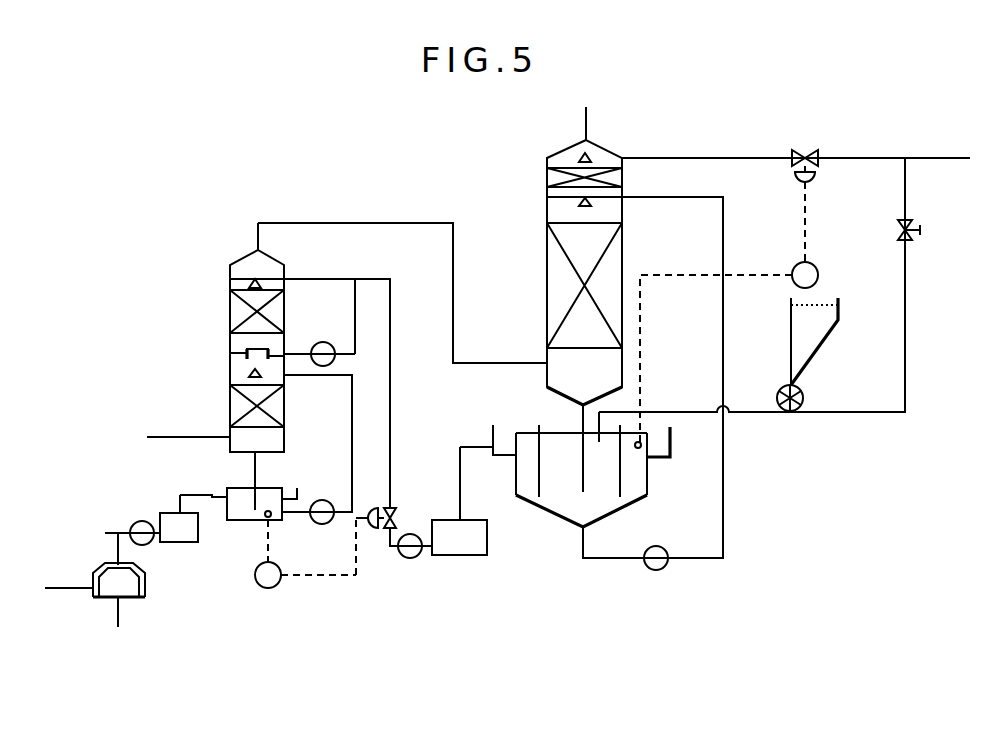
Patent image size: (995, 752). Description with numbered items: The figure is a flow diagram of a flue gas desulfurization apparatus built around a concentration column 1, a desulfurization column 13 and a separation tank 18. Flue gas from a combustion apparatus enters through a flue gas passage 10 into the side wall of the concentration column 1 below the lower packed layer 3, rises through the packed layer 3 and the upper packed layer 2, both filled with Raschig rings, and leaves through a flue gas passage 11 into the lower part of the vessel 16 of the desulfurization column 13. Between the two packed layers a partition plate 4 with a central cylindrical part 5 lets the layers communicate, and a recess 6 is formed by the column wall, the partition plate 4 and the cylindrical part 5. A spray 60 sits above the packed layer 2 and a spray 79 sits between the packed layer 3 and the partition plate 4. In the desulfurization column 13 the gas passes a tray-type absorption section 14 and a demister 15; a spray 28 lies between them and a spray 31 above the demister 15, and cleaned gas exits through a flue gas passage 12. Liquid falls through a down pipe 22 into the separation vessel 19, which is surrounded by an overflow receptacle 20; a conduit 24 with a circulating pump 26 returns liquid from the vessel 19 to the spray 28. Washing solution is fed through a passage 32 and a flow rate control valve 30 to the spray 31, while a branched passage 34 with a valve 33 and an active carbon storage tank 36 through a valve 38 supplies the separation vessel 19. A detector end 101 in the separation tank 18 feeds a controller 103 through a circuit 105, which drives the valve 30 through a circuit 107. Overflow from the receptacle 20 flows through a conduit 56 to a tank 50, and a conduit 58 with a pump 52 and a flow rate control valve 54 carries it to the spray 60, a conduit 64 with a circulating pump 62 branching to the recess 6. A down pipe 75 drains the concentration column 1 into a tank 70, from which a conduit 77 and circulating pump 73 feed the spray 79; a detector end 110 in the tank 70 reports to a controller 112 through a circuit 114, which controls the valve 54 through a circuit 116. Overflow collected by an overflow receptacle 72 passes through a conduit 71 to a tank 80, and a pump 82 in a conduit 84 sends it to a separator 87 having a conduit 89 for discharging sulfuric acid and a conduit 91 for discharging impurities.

The concentration column 1 is at (247, 252).
The packed layer 2 is at (237, 310).
The packed layer 3 is at (232, 407).
The partition plate 4 is at (240, 357).
The cylindrical part 5 is at (244, 352).
The recess 6 is at (286, 348).
The flue gas passage 10 is at (157, 437).
The flue gas passage 11 is at (378, 223).
The flue gas passage 12 is at (586, 117).
The desulfurization column 13 is at (623, 217).
The absorption section 14 is at (548, 253).
The demister 15 is at (548, 175).
The vessel 16 is at (548, 345).
The separation tank 18 is at (648, 488).
The separation vessel 19 is at (608, 518).
The overflow receptacle 20 is at (672, 438).
The down pipe 22 is at (580, 412).
The conduit 24 is at (724, 535).
The circulating pump 26 is at (657, 572).
The spray 28 is at (547, 197).
The flow rate control valve 30 is at (818, 155).
The spray 31 is at (583, 160).
The passage 32 is at (750, 158).
The valve 33 is at (912, 228).
The passage 34 is at (905, 298).
The storage tank 36 is at (840, 318).
The valve 38 is at (803, 398).
The tank 50 is at (485, 555).
The pump 52 is at (416, 558).
The flow rate control valve 54 is at (392, 508).
The conduit 56 is at (460, 440).
The conduit 58 is at (392, 368).
The spray 60 is at (245, 283).
The circulating pump 62 is at (335, 353).
The conduit 64 is at (357, 300).
The tank 70 is at (240, 520).
The conduit 71 is at (180, 503).
The overflow receptacle 72 is at (214, 494).
The circulating pump 73 is at (322, 500).
The down pipe 75 is at (297, 490).
The conduit 77 is at (354, 434).
The spray 79 is at (262, 375).
The tank 80 is at (180, 542).
The pump 82 is at (133, 522).
The conduit 84 is at (105, 533).
The separator 87 is at (146, 596).
The conduit 89 is at (60, 588).
The conduit 91 is at (118, 612).
The detector end 101 is at (650, 440).
The controller 103 is at (816, 268).
The circuit 105 is at (641, 318).
The circuit 107 is at (805, 207).
The detector end 110 is at (272, 518).
The controller 112 is at (268, 588).
The circuit 114 is at (318, 570).
The circuit 116 is at (358, 573).